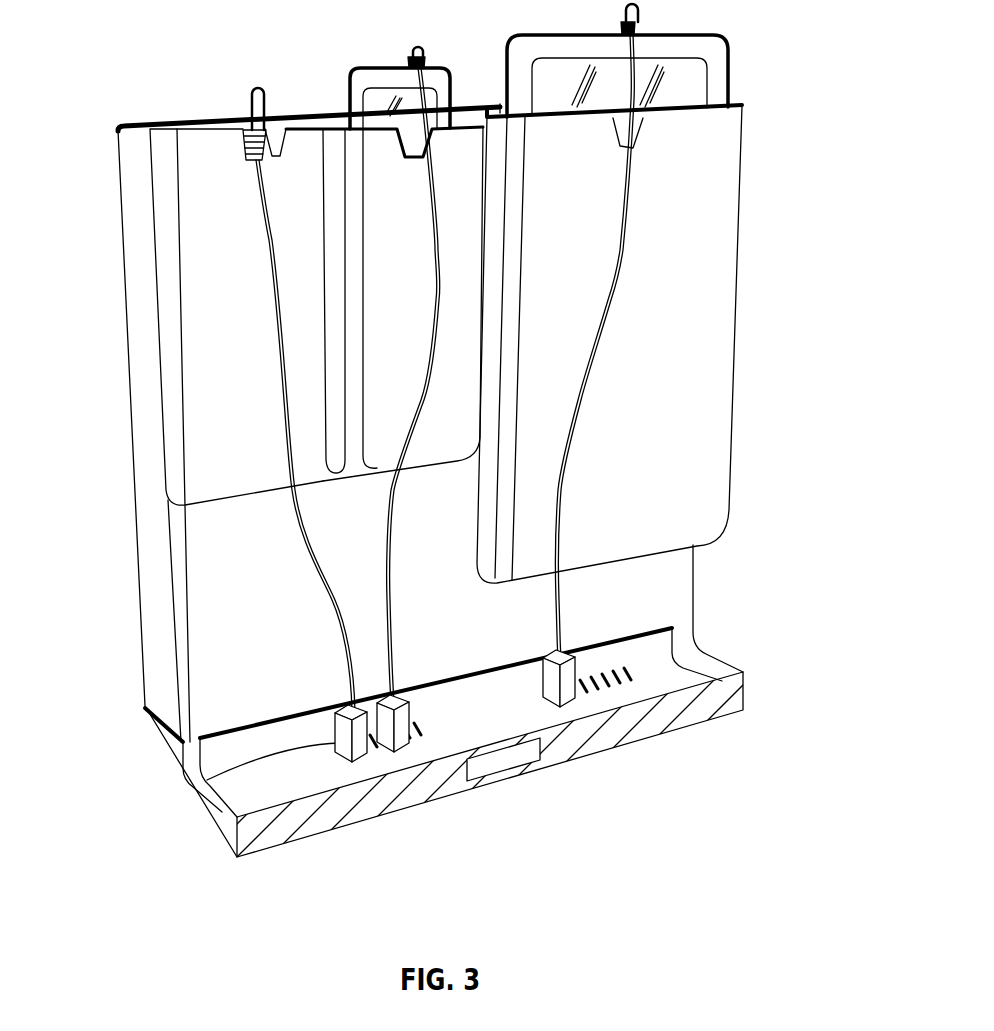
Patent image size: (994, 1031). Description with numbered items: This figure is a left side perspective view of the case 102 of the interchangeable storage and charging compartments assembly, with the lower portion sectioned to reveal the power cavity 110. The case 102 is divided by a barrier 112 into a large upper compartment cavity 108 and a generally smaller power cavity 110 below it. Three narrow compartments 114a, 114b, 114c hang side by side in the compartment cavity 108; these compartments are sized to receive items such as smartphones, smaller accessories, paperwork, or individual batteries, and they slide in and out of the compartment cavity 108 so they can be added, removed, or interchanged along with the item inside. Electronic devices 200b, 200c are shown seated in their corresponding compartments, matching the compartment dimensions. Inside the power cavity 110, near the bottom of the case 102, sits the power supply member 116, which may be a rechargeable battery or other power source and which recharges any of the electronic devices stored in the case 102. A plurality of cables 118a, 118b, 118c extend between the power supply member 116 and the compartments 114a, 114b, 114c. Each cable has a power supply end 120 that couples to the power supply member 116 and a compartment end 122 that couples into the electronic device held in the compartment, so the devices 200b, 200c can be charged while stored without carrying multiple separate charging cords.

The case 102 is at (150, 422).
The compartment cavity 108 is at (138, 120).
The power cavity 110 is at (342, 820).
The barrier 112 is at (667, 675).
The compartment 114a is at (732, 247).
The compartment 114b is at (380, 178).
The compartment 114c is at (190, 238).
The power supply member 116 is at (500, 763).
The cable 118a is at (574, 437).
The cable 118b is at (430, 130).
The cable 118c is at (282, 400).
The power supply end 120 is at (237, 813).
The compartment end 122 is at (249, 112).
The electronic device 200b is at (703, 33).
The electronic device 200c is at (383, 68).